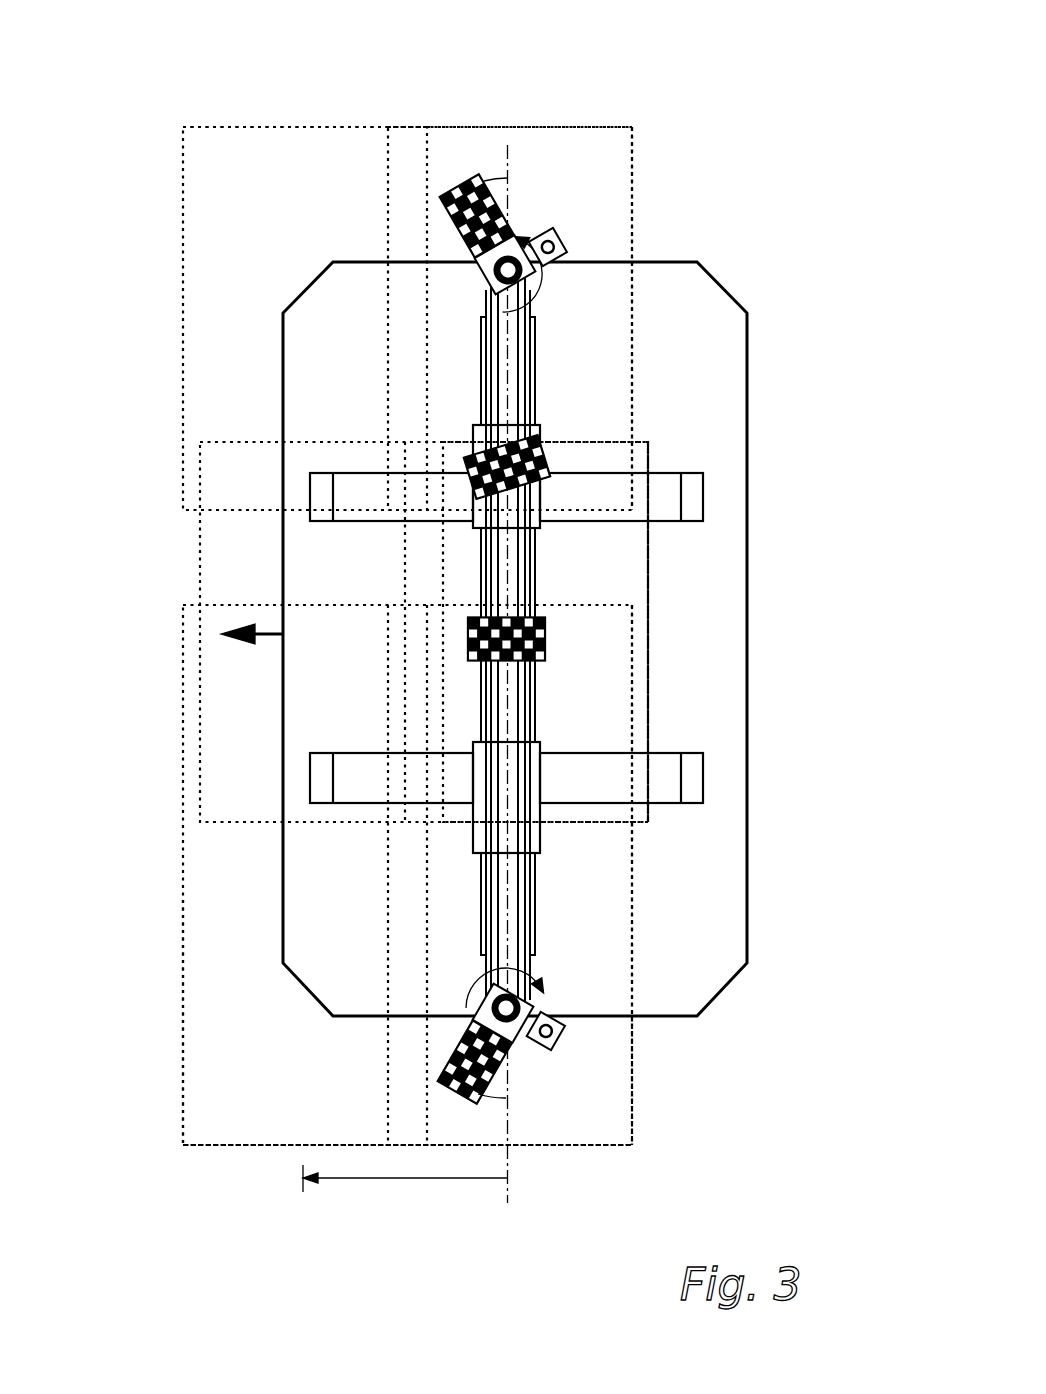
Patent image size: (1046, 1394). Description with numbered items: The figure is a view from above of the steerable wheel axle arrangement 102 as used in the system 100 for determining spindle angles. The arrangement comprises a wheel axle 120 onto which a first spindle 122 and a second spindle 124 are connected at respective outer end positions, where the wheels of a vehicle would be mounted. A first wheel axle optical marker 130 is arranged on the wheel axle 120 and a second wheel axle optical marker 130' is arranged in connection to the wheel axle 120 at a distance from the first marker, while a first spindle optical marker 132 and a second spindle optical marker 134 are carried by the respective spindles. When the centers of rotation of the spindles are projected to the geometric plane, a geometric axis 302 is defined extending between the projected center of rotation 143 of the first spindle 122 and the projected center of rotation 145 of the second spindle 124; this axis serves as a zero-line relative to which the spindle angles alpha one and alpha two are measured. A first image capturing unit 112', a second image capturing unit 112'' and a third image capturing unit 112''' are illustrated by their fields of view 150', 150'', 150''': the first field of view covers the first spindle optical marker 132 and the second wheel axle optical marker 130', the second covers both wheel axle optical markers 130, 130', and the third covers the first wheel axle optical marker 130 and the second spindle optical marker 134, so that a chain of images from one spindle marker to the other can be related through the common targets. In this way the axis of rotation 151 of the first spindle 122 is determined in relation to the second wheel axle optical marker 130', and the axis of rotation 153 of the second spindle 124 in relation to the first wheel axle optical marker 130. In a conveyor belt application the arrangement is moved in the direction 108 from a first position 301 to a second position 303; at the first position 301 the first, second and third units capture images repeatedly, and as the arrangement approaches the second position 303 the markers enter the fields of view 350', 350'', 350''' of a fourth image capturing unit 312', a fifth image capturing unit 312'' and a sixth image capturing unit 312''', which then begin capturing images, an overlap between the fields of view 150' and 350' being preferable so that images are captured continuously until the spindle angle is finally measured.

The system 100 is at (792, 326).
The steerable wheel axle arrangement 102 is at (662, 168).
The direction of movement 108 is at (265, 632).
The first image capturing unit 112' is at (529, 66).
The second image capturing unit 112'' is at (642, 632).
The third image capturing unit 112''' is at (725, 840).
The wheel axle 120 is at (522, 877).
The first spindle 122 is at (540, 220).
The second spindle 124 is at (557, 1037).
The first wheel axle optical marker 130 is at (650, 690).
The second wheel axle optical marker 130' is at (654, 467).
The first spindle optical marker 132 is at (463, 187).
The second spindle optical marker 134 is at (470, 1097).
The projected center of rotation of the first spindle 143 is at (661, 254).
The axis of rotation of the first spindle 151 is at (505, 292).
The projected center of rotation of the second spindle 145 is at (570, 1099).
The axis of rotation of the second spindle 153 is at (510, 1037).
The field of view of the first image capturing unit 150' is at (410, 271).
The field of view of the second image capturing unit 150'' is at (623, 632).
The field of view of the third image capturing unit 150''' is at (696, 1080).
The first position 301 is at (511, 690).
The geometric axis 302 is at (510, 363).
The second position 303 is at (396, 1194).
The fourth image capturing unit 312' is at (285, 89).
The fifth image capturing unit 312'' is at (360, 632).
The sixth image capturing unit 312''' is at (401, 1186).
The field of view of the fourth image capturing unit 350' is at (407, 273).
The field of view of the fifth image capturing unit 350'' is at (352, 875).
The field of view of the sixth image capturing unit 350''' is at (122, 1022).